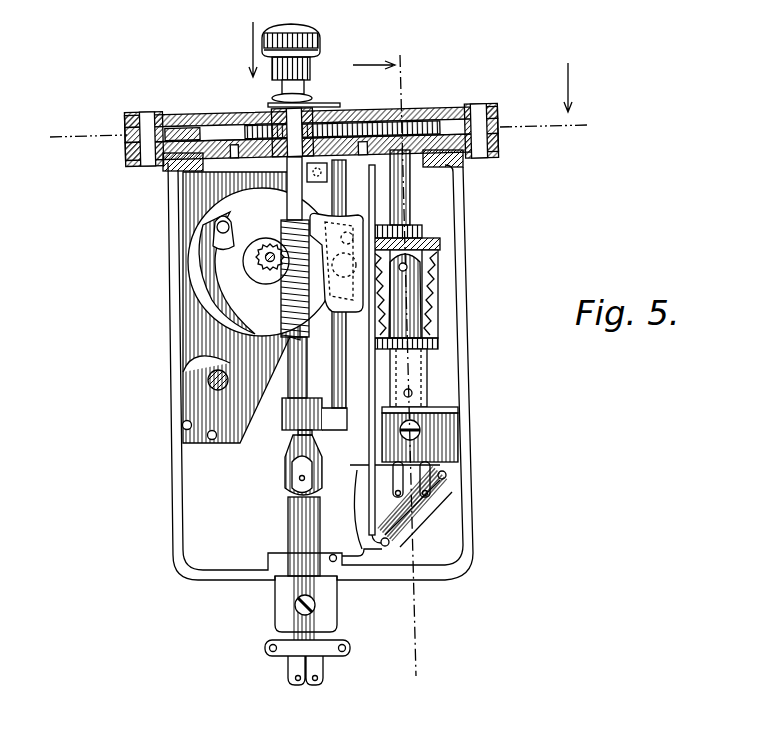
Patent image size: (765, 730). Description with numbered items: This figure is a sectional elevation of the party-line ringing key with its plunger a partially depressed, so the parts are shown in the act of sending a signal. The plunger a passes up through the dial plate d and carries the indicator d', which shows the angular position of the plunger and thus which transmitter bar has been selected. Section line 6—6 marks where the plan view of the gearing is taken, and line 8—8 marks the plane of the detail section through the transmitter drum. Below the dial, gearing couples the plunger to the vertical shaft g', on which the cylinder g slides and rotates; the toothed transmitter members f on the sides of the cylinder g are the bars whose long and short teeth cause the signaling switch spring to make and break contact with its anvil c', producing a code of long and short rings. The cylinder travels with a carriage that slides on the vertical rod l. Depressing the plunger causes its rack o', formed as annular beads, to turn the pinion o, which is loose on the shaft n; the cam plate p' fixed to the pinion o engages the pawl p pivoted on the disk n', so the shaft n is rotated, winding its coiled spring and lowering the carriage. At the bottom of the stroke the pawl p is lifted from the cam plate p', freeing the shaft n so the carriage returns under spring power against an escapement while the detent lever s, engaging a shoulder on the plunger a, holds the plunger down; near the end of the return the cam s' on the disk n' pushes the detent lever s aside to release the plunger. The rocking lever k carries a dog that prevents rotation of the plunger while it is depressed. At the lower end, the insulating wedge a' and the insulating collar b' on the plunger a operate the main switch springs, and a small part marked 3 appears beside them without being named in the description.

The indicator d' is at (309, 94).
The dial plate d is at (311, 125).
The section line 6— 6 is at (319, 84).
The section line 8— 8 is at (411, 368).
The rocking lever k is at (328, 171).
The cam s' is at (340, 240).
The detent lever s is at (343, 257).
The vertical shaft g' is at (417, 187).
The pawl p is at (208, 233).
The disk n' is at (240, 262).
The shaft n is at (269, 266).
The pinion o is at (266, 275).
The cam plate p' is at (242, 307).
The rack o' is at (307, 278).
The transmitter members f is at (441, 297).
The cylinder g is at (420, 421).
The vertical rod l is at (334, 381).
The anvil c' is at (399, 378).
The insulating sector-shaped wedge a' is at (301, 415).
The plunger a is at (281, 444).
The insulating piece or collar b' is at (287, 465).
The spring wire 3 is at (397, 511).